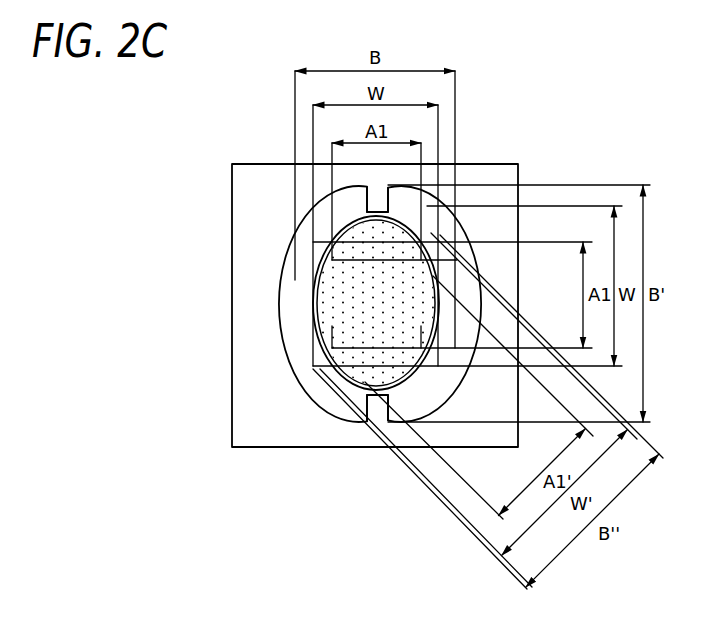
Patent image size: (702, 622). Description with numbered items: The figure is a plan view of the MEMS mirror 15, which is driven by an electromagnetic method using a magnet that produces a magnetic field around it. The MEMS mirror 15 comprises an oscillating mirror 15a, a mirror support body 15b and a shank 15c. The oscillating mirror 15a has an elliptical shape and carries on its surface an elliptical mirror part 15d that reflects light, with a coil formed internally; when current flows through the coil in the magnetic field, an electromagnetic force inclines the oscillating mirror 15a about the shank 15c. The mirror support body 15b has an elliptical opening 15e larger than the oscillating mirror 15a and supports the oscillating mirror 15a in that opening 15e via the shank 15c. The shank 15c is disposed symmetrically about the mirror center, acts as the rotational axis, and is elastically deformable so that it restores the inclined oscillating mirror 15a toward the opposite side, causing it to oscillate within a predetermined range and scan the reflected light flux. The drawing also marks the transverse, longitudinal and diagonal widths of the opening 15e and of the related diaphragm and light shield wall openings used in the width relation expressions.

The MEMS mirror 15 is at (232, 207).
The oscillating mirror 15a is at (355, 268).
The mirror support body 15b is at (250, 311).
The shank 15c is at (375, 203).
The elliptical mirror part 15d is at (320, 337).
The elliptical opening 15e is at (299, 340).